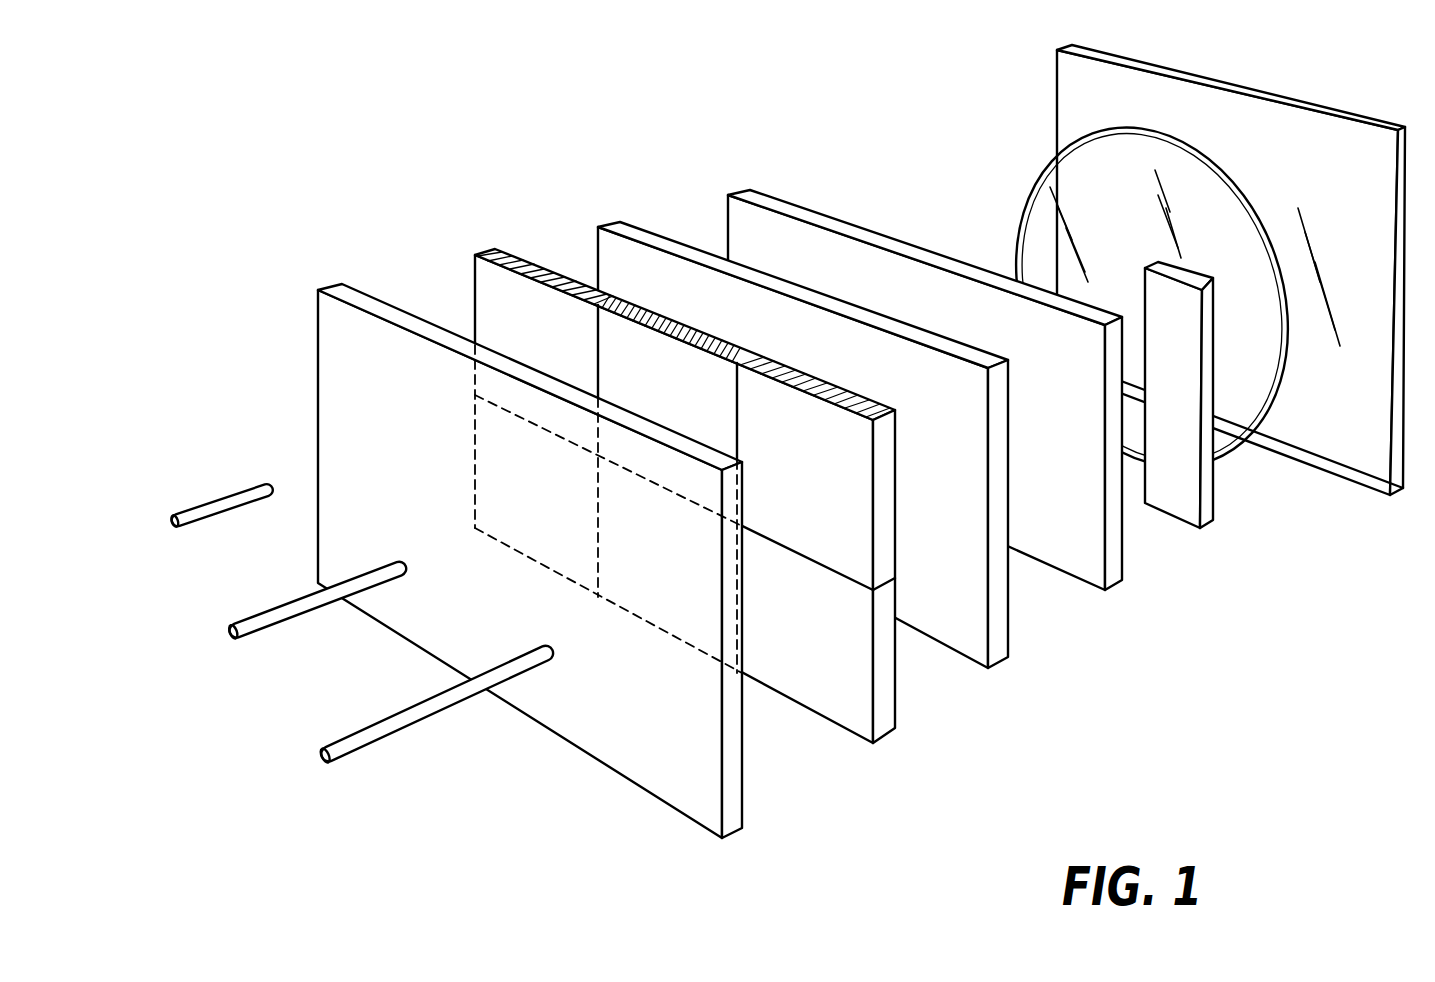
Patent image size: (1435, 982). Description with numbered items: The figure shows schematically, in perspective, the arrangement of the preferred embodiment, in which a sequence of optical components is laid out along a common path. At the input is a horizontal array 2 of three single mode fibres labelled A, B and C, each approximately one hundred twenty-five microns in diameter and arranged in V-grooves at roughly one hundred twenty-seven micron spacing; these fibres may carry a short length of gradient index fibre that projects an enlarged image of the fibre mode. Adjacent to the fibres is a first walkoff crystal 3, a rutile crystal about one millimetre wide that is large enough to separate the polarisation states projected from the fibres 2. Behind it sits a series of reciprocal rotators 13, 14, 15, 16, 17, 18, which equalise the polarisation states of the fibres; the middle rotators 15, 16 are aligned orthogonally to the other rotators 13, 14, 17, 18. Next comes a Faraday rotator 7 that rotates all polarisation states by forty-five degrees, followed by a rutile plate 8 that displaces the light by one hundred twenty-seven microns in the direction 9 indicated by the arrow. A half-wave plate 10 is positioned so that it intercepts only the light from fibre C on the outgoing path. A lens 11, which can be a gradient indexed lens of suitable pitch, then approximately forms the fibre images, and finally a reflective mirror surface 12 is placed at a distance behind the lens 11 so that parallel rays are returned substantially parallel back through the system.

The horizontal array of single mode fibres 2 is at (224, 472).
The first walkoff crystal 3 is at (687, 787).
The Faraday rotator 7 is at (978, 637).
The rutile plate 8 is at (1095, 570).
The direction 9 is at (840, 196).
The half-wave plate 10 is at (1193, 512).
The lens 11 is at (1252, 383).
The reflective mirror surface 12 is at (1377, 463).
The reciprocal rotator 13 is at (492, 279).
The reciprocal rotator 14 is at (500, 490).
The middle reciprocal rotator 15 is at (628, 380).
The middle reciprocal rotator 16 is at (692, 592).
The reciprocal rotator 17 is at (843, 497).
The reciprocal rotator 18 is at (853, 686).